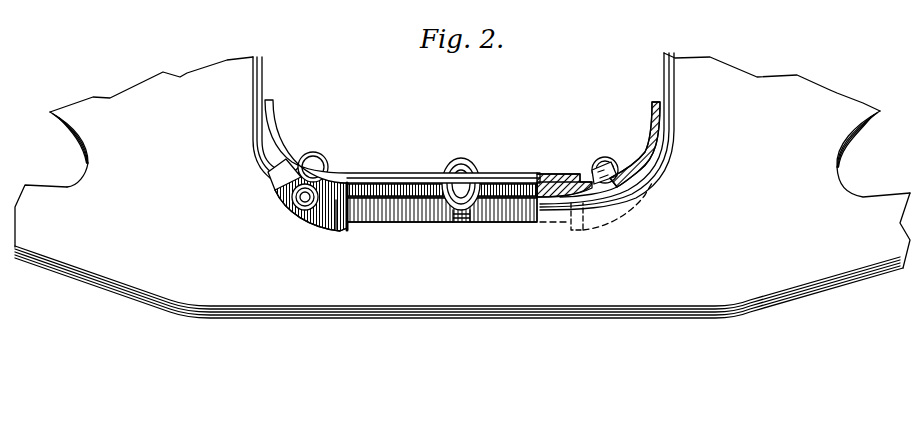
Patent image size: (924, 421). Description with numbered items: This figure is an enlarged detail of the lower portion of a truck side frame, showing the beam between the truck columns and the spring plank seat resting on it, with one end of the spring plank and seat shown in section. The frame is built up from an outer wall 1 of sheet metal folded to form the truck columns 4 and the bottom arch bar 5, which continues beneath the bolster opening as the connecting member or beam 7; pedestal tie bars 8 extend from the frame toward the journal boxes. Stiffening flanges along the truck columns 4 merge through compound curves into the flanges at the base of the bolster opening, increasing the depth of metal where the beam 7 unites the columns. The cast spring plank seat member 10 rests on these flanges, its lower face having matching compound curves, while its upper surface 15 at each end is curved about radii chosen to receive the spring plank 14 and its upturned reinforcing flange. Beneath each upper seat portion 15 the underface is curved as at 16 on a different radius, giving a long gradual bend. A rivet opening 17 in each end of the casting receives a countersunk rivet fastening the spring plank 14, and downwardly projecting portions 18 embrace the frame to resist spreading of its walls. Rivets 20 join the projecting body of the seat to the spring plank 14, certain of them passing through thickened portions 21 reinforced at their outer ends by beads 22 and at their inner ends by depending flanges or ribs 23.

The outer wall 1 is at (227, 65).
The truck columns 4 is at (263, 62).
The bottom arch bar 5 is at (57, 123).
The beam 7 is at (463, 295).
The pedestal tie bars 8 is at (868, 293).
The spring plank seat member 10 is at (549, 182).
The spring plank 14 is at (423, 177).
The upper surface 15 is at (292, 165).
The curved portion 16 is at (588, 186).
The rivet opening 17 is at (643, 180).
The downwardly projecting portions 18 is at (308, 223).
The rivets 20 is at (325, 158).
The thickened portions 21 is at (280, 187).
The beads 22 is at (267, 182).
The depending flanges or ribs 23 is at (342, 228).